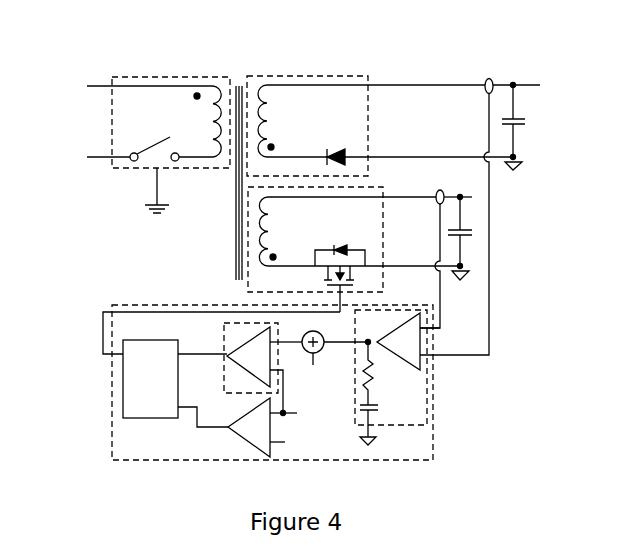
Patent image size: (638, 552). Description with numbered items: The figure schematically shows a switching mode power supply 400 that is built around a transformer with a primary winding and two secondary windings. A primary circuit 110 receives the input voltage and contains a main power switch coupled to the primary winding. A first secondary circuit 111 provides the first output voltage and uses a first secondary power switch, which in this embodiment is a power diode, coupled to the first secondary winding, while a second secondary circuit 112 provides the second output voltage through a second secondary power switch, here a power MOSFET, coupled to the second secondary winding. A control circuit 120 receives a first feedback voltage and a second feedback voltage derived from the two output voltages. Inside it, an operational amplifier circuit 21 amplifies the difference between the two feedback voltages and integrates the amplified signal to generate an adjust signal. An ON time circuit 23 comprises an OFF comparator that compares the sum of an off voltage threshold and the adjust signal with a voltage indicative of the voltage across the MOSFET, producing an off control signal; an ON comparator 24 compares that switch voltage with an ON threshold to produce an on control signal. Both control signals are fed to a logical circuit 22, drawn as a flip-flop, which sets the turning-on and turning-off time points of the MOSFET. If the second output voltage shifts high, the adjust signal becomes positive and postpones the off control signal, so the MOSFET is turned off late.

The switching mode power supply 400 is at (120, 53).
The primary circuit 110 is at (178, 72).
The first secondary circuit 111 is at (387, 106).
The second secondary circuit 112 is at (402, 227).
The control circuit 120 is at (152, 455).
The operational amplifier circuit 21 is at (414, 419).
The logical circuit 22 is at (150, 379).
The ON time circuit 23 is at (248, 392).
The ON comparator 24 is at (249, 427).